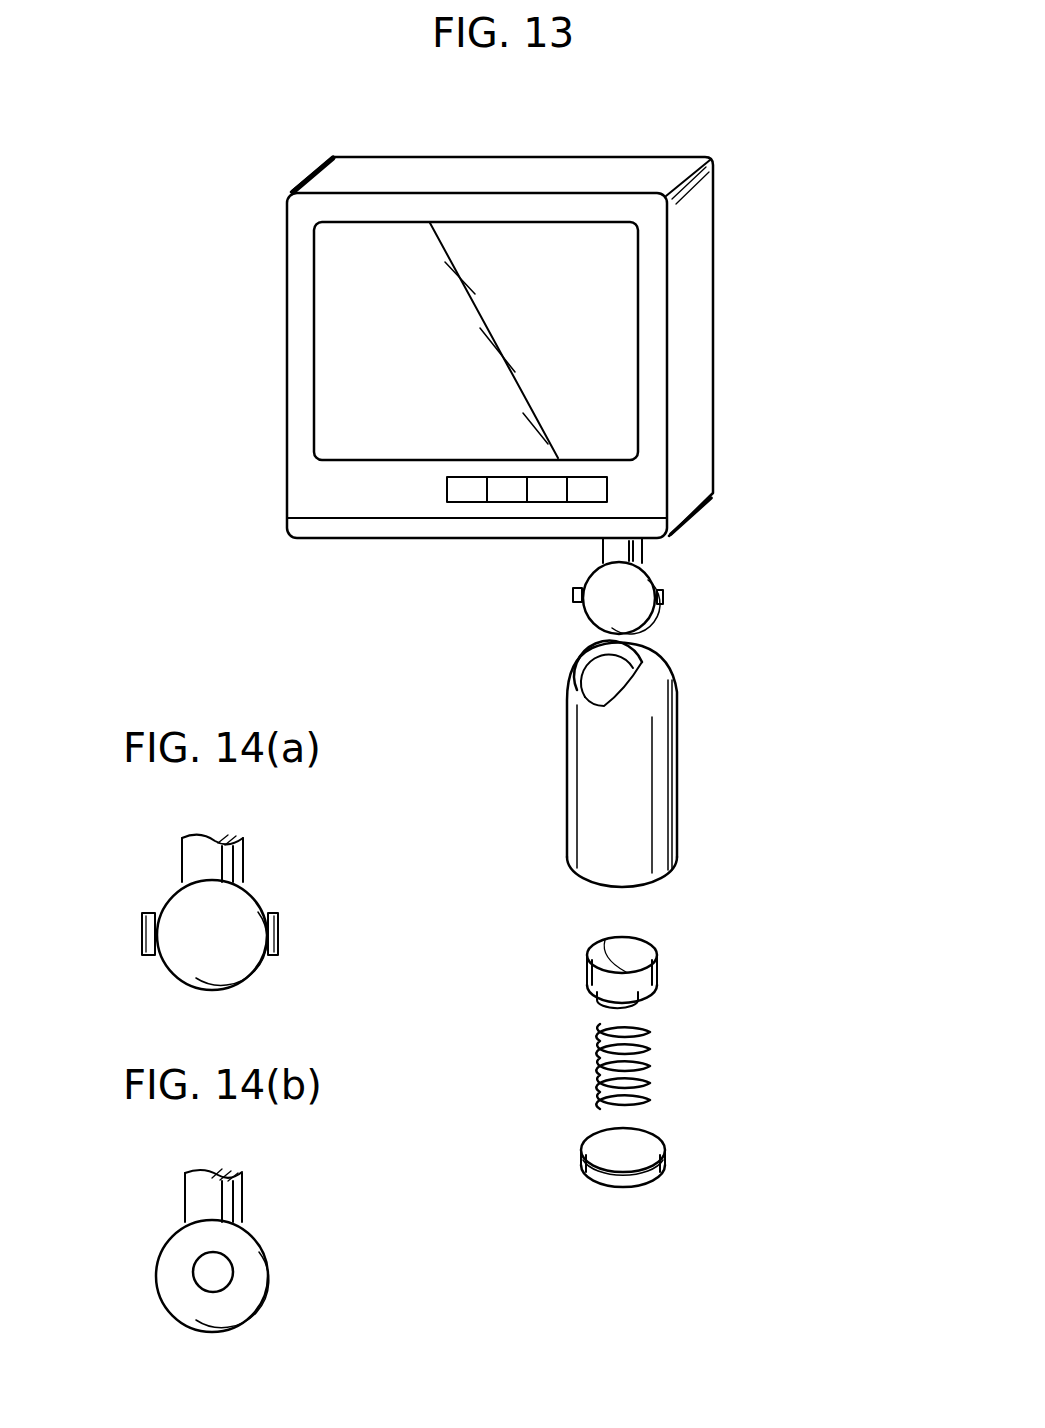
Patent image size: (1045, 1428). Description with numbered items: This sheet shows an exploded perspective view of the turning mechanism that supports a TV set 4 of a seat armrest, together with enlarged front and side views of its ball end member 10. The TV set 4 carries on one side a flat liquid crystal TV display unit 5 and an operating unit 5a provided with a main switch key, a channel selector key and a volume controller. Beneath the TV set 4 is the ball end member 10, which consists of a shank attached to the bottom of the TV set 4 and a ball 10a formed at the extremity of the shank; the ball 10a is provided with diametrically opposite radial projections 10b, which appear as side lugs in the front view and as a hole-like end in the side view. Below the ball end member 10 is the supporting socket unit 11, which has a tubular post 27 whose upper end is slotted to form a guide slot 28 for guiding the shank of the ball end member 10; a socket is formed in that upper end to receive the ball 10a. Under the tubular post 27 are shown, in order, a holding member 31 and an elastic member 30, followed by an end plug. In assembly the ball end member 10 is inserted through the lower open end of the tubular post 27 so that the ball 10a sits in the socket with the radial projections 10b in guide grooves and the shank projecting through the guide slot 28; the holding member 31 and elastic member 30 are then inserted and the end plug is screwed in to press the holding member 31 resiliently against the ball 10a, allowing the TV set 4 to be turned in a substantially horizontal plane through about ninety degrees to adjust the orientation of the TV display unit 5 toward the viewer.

In FIG. 13, the TV set 4 is at (703, 247).
In FIG. 13, the TV display unit 5 is at (618, 367).
In FIG. 13, the operating unit 5a is at (465, 492).
In FIG. 13, the ball end member 10 is at (643, 553).
In FIG. 14A, the ball end member 10 is at (243, 863).
In FIG. 14B, the ball end member 10 is at (242, 1205).
In FIG. 13, the ball 10a is at (652, 559).
In FIG. 14A, the ball 10a is at (207, 912).
In FIG. 14B, the ball 10a is at (189, 1250).
In FIG. 13, the radial projections 10b is at (573, 595).
In FIG. 14A, the radial projections 10b is at (142, 937).
In FIG. 14B, the radial projections 10b is at (195, 1272).
In FIG. 13, the supporting socket unit 11 is at (651, 764).
In FIG. 13, the tubular post 27 is at (651, 764).
In FIG. 13, the guide slot 28 is at (637, 690).
In FIG. 13, the elastic member 30 is at (642, 1063).
In FIG. 13, the holding member 31 is at (660, 963).